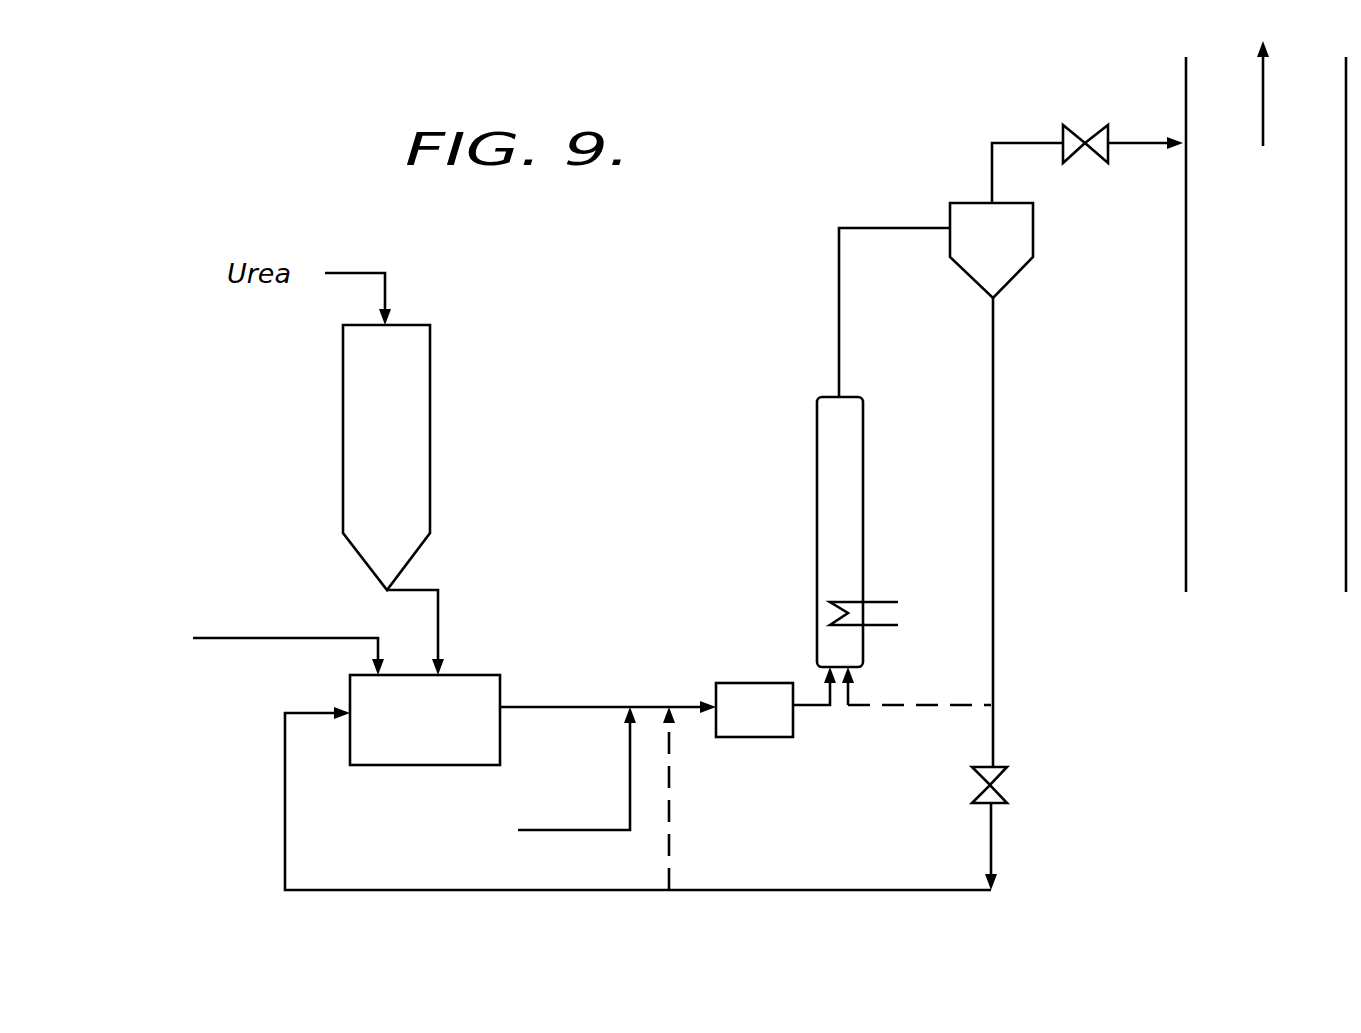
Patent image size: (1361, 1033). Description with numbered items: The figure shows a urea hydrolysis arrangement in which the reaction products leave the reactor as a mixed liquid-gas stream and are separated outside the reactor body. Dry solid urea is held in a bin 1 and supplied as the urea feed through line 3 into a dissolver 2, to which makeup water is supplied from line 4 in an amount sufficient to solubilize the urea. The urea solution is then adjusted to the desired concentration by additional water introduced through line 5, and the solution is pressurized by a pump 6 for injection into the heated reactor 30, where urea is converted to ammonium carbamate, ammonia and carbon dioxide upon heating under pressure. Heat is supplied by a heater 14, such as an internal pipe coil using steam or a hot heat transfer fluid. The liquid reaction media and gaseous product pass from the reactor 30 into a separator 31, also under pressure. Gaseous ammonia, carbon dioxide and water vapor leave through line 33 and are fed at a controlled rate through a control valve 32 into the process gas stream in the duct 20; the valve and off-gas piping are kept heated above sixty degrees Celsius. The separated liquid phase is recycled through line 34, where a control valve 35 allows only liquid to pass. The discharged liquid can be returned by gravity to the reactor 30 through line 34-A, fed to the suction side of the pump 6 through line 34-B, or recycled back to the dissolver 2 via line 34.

The bin 1 is at (386, 458).
The dissolver 2 is at (425, 720).
The urea feed line 3 is at (438, 607).
The makeup water line 4 is at (228, 639).
The additional water line 5 is at (630, 775).
The pump 6 is at (750, 690).
The heater 14 is at (873, 602).
The duct 20 is at (1266, 316).
The heated reactor 30 is at (817, 440).
The separator 31 is at (976, 228).
The control valve 32 is at (1078, 132).
The gas product line 33 is at (1138, 145).
The liquid recycle line 34 is at (993, 442).
The gravity recycle line 34-A is at (906, 705).
The pump suction recycle line 34-B is at (669, 795).
The control valve 35 is at (995, 788).